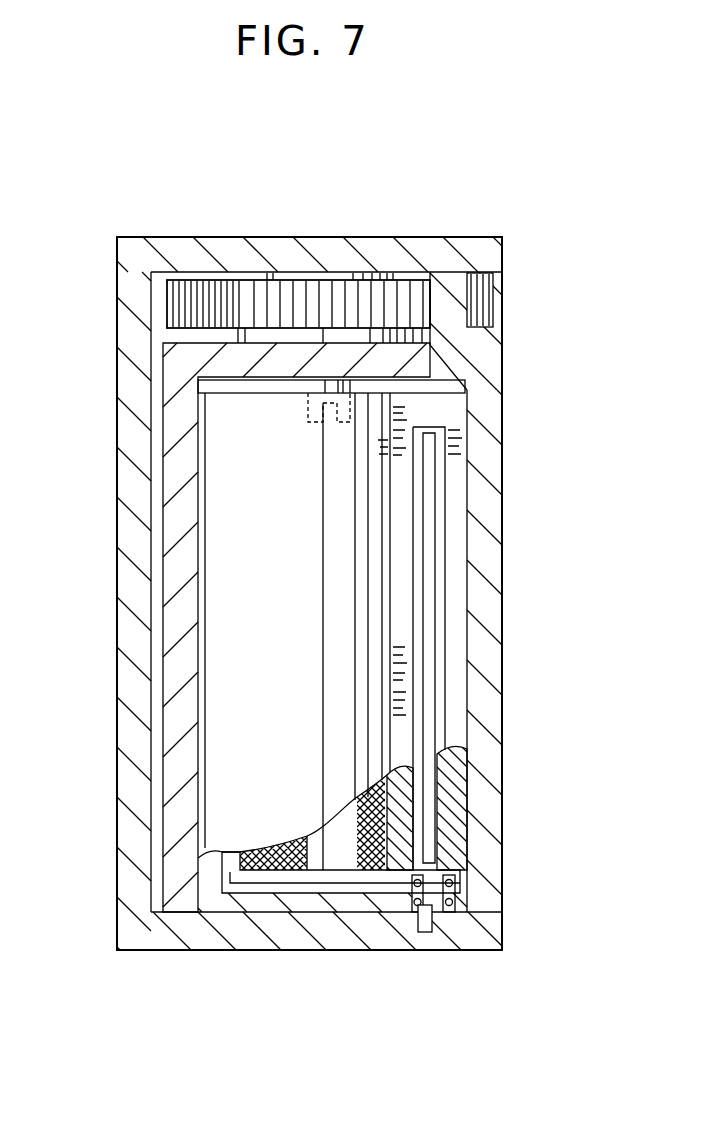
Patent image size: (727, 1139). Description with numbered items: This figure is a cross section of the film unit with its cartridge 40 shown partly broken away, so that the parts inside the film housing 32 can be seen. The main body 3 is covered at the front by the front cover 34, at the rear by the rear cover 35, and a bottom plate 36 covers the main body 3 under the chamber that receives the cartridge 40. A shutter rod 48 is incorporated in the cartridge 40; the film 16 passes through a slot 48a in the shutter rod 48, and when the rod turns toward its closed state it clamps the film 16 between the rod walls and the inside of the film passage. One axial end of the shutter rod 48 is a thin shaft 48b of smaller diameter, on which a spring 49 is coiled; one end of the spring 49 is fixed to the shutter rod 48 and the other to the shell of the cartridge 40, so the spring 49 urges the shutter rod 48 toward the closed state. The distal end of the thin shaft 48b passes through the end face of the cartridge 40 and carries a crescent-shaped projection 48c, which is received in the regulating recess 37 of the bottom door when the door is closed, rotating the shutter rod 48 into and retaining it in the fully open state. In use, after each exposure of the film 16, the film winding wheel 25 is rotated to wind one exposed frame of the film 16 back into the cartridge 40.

The film housing 32 is at (303, 202).
The front cover 34 is at (117, 612).
The bottom plate 36 is at (198, 945).
The rear cover 35 is at (487, 460).
The film winding wheel 25 is at (493, 300).
The main body 3 is at (177, 370).
The cartridge 40 is at (217, 688).
The film 16 is at (275, 848).
The shutter rod 48 is at (468, 823).
The slot 48a is at (442, 779).
The thin shaft 48b is at (450, 893).
The crescent-shaped projection 48c is at (440, 945).
The spring 49 is at (455, 882).
The regulating recess 37 is at (405, 955).